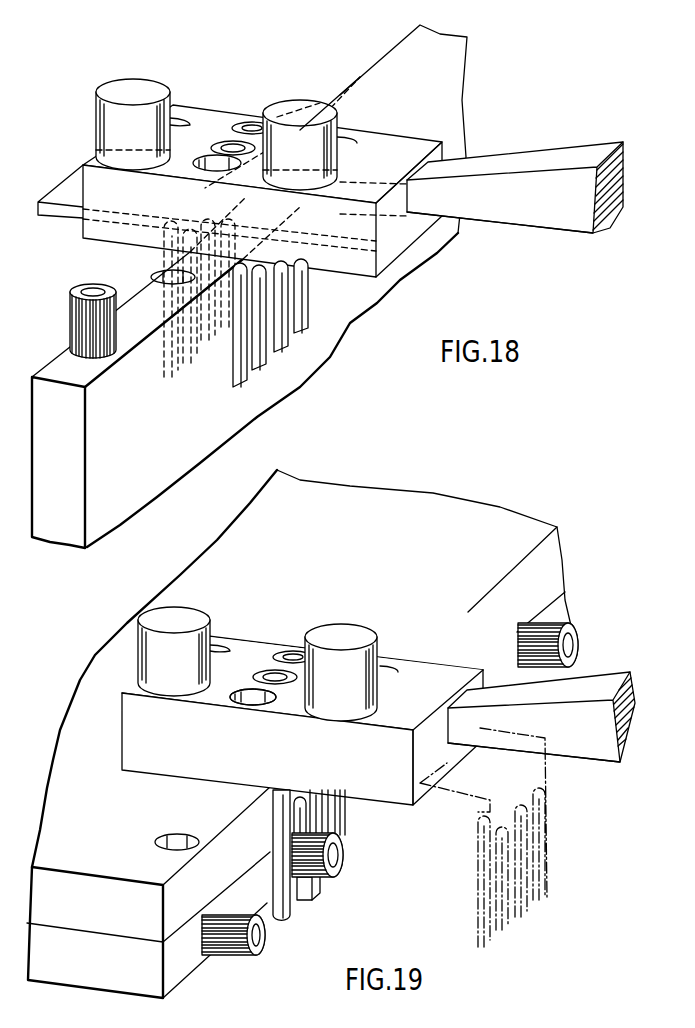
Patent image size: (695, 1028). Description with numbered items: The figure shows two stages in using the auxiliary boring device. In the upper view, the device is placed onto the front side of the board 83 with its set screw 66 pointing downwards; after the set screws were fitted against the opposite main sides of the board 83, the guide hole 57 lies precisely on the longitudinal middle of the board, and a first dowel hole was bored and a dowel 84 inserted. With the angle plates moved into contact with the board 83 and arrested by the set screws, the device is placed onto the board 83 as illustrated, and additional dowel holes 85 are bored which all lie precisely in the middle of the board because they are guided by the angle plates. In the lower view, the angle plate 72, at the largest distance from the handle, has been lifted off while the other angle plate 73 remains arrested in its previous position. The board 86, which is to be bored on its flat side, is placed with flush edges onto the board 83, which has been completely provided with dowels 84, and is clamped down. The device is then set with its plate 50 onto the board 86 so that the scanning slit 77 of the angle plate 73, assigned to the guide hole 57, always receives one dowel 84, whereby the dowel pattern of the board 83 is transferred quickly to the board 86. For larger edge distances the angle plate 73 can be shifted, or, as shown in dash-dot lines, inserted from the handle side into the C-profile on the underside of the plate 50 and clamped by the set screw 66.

In FIG. 19, the plate 50 is at (140, 748).
In FIG. 19, the guide hole 57 is at (252, 693).
In FIG. 19, the set screw 66 is at (355, 640).
In FIG. 19, the angle plate 72 is at (490, 885).
In FIG. 19, the angle plate 73 is at (285, 918).
In FIG. 19, the scanning slit 77 is at (305, 890).
In FIG. 18, the board 83 is at (135, 483).
In FIG. 19, the board 83 is at (58, 968).
In FIG. 18, the dowel 84 is at (80, 317).
In FIG. 19, the dowel 84 is at (575, 645).
In FIG. 18, the additional dowel hole 85 is at (160, 274).
In FIG. 19, the board 86 is at (45, 790).